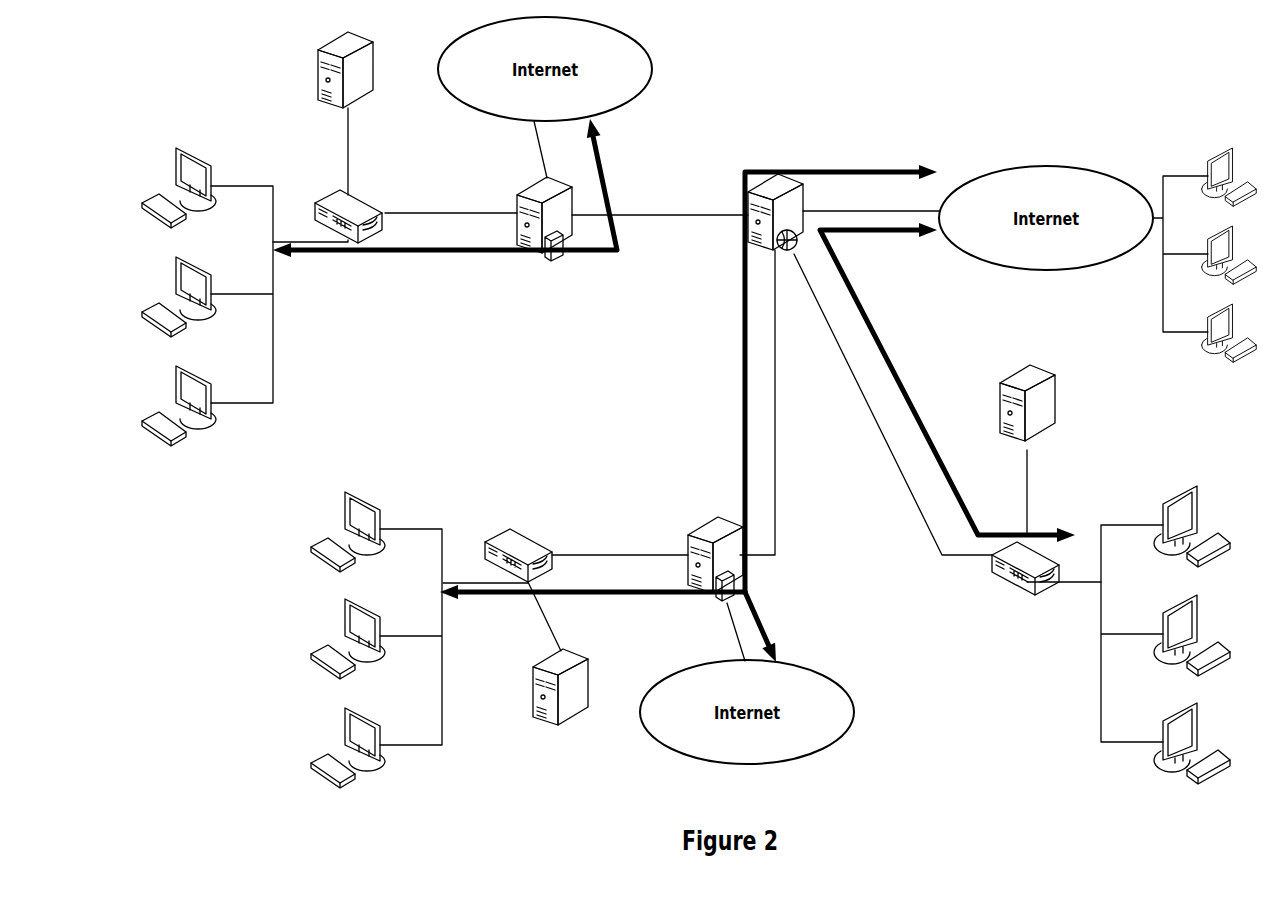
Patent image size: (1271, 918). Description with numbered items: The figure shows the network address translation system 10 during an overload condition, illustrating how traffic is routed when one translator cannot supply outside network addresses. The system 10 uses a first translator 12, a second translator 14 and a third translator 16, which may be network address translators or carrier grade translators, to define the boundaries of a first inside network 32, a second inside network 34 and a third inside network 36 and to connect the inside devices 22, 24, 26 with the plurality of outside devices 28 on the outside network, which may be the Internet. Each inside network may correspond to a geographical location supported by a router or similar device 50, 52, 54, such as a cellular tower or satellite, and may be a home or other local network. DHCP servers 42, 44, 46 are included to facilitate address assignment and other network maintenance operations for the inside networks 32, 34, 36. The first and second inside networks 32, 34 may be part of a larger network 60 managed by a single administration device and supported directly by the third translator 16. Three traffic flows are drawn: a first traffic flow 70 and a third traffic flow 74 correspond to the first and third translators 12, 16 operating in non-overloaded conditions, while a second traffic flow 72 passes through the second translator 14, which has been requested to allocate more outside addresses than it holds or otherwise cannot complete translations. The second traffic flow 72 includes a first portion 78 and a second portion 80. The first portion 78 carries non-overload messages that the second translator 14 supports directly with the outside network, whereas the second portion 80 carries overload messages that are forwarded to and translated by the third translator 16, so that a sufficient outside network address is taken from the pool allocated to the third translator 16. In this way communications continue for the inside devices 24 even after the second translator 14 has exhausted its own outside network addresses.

The network address translation system 10 is at (951, 46).
The first translator 12 is at (532, 190).
The second translator 14 is at (702, 528).
The third translator 16 is at (778, 190).
The client computers 22 is at (111, 225).
The second plurality of inside devices 24 is at (261, 608).
The third plurality of inside devices 26 is at (1223, 509).
The plurality of outside devices 28 is at (1163, 162).
The first inside network 32 is at (446, 161).
The second inside network 34 is at (594, 492).
The third inside network 36 is at (1086, 474).
The DHCP server 42 is at (357, 44).
The DHCP server 44 is at (560, 706).
The DHCP server 46 is at (1025, 370).
The router 50 is at (372, 206).
The router 52 is at (530, 540).
The router 54 is at (1000, 591).
The third larger network 60 is at (556, 398).
The first traffic flow 70 is at (490, 253).
The second traffic flow 72 is at (600, 598).
The third traffic flow 74 is at (887, 360).
The first portion 78 is at (765, 633).
The second portion 80 is at (743, 430).